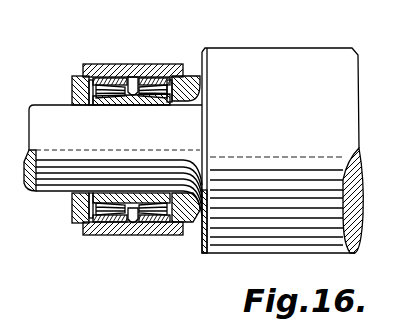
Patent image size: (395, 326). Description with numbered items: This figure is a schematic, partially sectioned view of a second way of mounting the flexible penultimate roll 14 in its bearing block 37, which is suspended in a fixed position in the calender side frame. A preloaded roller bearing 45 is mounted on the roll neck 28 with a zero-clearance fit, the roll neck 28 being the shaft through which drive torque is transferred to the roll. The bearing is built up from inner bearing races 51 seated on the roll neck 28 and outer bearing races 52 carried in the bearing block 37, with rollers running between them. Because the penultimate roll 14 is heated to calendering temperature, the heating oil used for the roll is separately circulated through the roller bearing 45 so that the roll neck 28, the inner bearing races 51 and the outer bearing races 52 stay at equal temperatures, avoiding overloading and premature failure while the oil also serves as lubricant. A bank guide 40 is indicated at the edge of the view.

The penultimate roll 14 is at (263, 67).
The roll shaft 28 is at (42, 118).
The inner bearing races 51 is at (74, 75).
The outer bearing races 52 is at (148, 72).
The bearing block 37 is at (171, 86).
The preloaded roller bearing 45 is at (115, 208).
The bank guides 40 is at (170, 319).